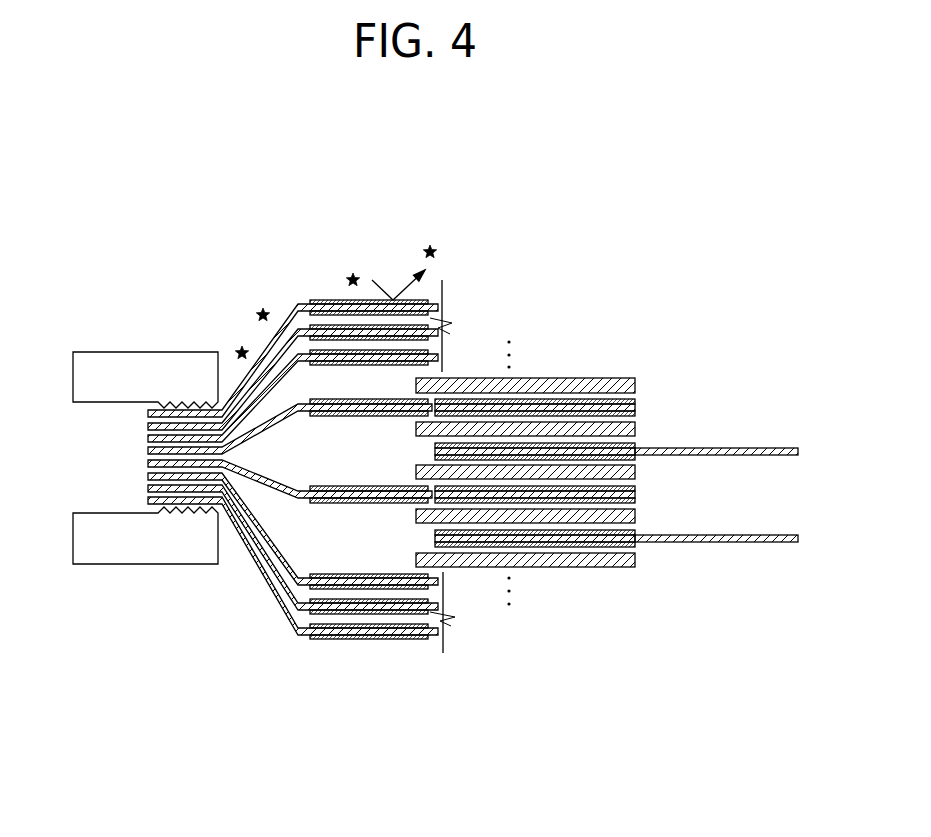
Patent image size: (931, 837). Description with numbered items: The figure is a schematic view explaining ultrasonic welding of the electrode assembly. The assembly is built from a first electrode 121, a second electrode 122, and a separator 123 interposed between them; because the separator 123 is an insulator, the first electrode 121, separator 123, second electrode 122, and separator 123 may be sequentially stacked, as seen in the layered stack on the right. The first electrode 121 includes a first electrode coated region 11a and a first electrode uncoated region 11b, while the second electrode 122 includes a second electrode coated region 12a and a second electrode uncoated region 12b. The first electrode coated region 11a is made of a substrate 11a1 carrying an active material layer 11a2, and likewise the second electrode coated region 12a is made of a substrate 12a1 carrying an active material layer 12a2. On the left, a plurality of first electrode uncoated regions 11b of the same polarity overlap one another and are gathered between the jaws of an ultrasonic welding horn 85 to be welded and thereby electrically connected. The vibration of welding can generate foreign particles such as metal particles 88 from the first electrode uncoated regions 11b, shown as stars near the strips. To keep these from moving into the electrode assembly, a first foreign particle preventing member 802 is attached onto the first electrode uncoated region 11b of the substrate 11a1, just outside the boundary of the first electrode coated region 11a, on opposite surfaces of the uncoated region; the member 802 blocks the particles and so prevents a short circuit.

The ultrasonic welding horn 85 is at (118, 365).
The first foreign particle preventing member 802 is at (318, 298).
The metal particles 88 is at (438, 250).
The first electrode 121 is at (339, 514).
The first electrode coated region 11a is at (339, 600).
The substrate 11a1 is at (482, 495).
The active material layer 11a2 is at (420, 608).
The first electrode uncoated region 11b is at (352, 500).
The second electrode 122 is at (607, 541).
The second electrode coated region 12a is at (536, 596).
The substrate 12a1 is at (613, 541).
The active material layer 12a2 is at (567, 546).
The second electrode uncoated region 12b is at (716, 550).
The separator 123 is at (636, 430).